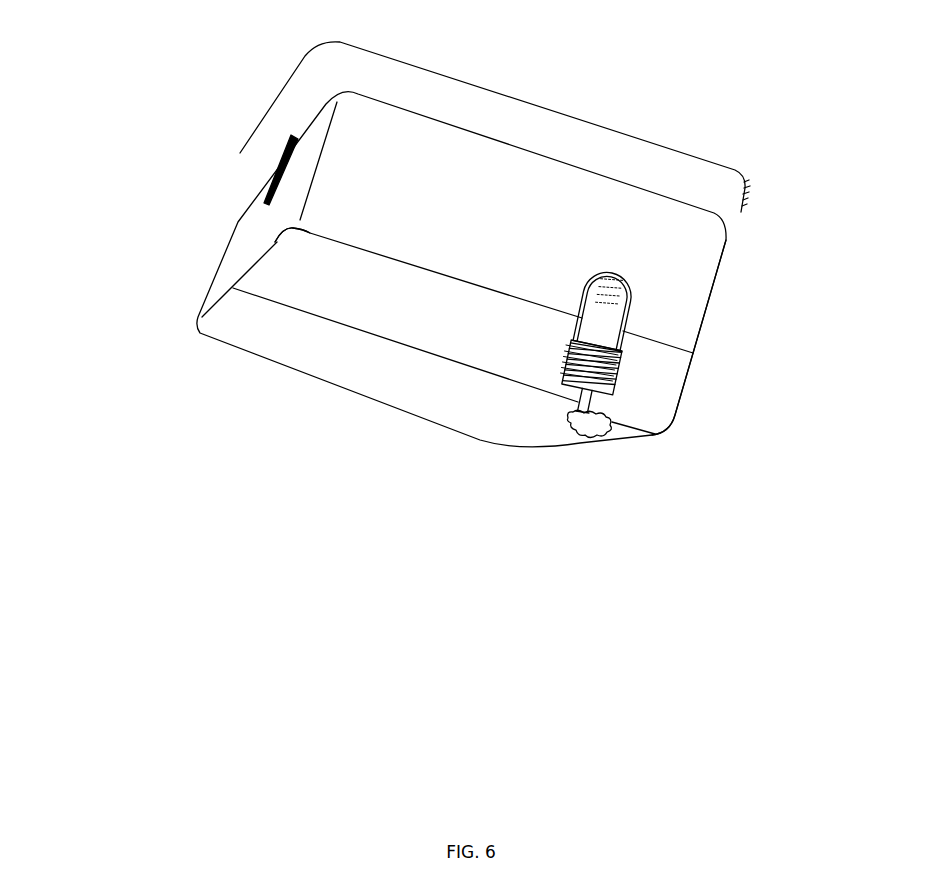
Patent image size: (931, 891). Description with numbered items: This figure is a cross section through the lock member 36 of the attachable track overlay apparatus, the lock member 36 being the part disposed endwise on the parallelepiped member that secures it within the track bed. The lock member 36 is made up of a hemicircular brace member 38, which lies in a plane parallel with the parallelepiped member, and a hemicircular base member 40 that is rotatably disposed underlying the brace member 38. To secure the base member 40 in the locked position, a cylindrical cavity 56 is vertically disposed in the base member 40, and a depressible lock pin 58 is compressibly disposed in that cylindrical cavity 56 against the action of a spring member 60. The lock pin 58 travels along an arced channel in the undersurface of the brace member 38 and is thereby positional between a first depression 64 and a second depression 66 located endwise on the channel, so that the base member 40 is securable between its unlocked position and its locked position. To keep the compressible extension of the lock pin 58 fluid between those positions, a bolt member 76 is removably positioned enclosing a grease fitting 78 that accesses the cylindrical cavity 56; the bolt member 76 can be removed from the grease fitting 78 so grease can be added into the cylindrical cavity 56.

The lock member 36 is at (437, 244).
The hemicircular brace member 38 is at (715, 252).
The hemicircular base member 40 is at (677, 410).
The cylindrical cavity 56 is at (601, 398).
The depressible lock pin 58 is at (627, 320).
The spring member 60 is at (570, 370).
The first depression 64 is at (277, 240).
The second depression 66 is at (635, 288).
The bolt member 76 is at (587, 440).
The grease fitting 78 is at (630, 428).